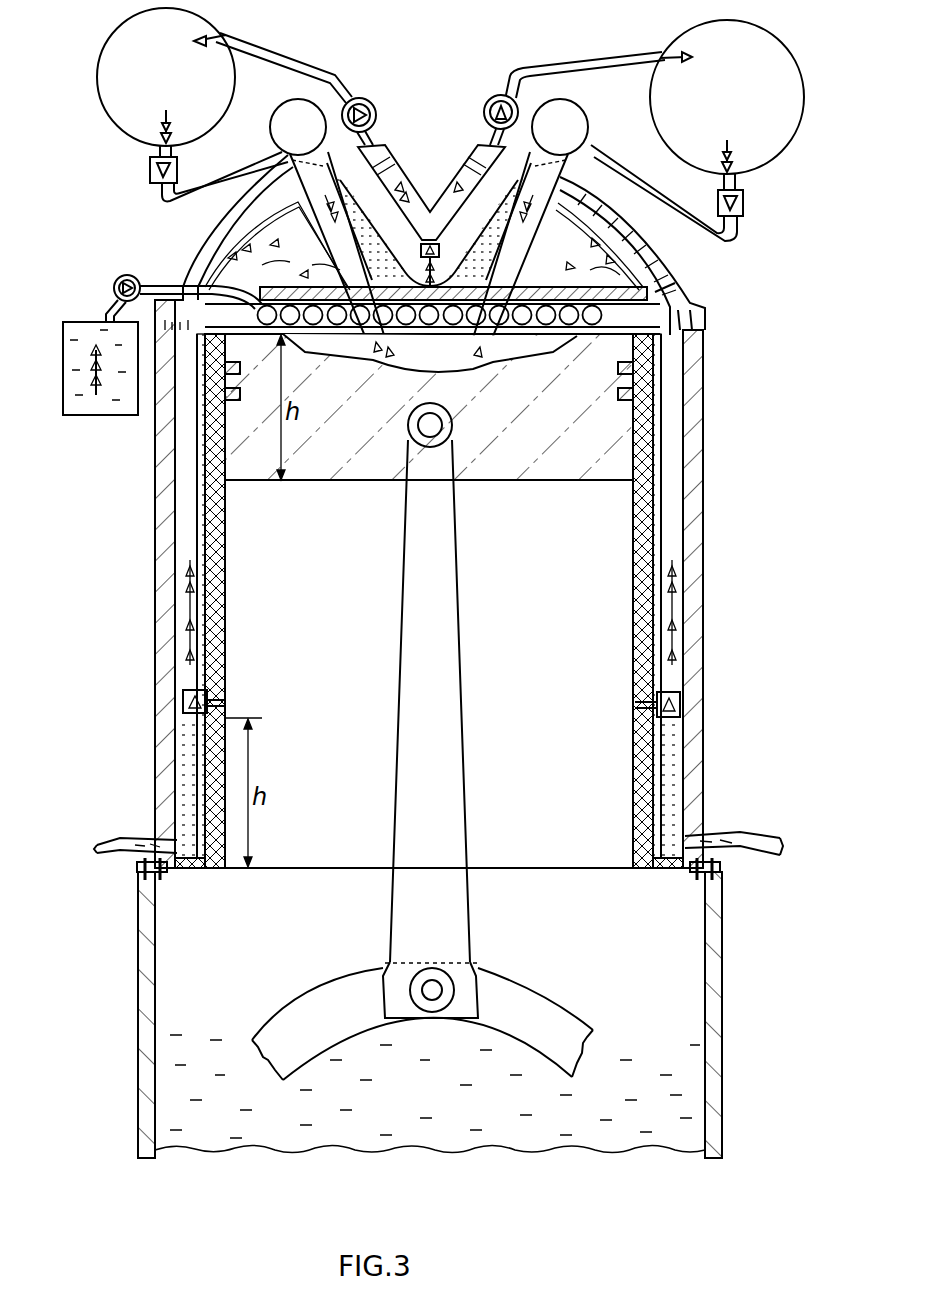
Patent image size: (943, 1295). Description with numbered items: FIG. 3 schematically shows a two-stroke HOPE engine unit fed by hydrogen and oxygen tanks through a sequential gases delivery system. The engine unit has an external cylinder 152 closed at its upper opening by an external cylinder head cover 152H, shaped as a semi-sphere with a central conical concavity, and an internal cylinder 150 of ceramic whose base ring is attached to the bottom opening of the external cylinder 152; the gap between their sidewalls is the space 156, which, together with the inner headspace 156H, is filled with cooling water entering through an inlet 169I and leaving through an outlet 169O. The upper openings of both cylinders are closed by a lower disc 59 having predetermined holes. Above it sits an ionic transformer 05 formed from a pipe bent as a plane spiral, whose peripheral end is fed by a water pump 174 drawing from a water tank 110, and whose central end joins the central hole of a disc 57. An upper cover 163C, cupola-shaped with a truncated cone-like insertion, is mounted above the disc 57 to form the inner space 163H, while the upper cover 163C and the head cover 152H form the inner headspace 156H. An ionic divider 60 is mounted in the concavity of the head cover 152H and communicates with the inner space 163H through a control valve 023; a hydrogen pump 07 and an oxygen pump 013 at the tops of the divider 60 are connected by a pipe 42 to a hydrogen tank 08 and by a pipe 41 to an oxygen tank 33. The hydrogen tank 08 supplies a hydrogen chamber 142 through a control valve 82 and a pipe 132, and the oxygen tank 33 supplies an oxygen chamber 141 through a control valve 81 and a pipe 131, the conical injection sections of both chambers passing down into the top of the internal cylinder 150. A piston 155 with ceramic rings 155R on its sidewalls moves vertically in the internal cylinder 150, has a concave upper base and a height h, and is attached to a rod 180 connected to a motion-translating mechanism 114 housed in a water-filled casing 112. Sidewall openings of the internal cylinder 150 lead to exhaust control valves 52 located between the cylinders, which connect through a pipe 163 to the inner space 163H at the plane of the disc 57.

The oxygen tank 33 is at (98, 82).
The pipe 41 is at (289, 62).
The oxygen pump 013 is at (369, 99).
The oxygen chamber 141 is at (310, 101).
The control valve 81 is at (150, 170).
The pipe 131 is at (236, 173).
The external cylinder head cover 152H is at (258, 193).
The inner headspace 156H is at (226, 243).
The disc 57 is at (250, 283).
The water pump 174 is at (120, 278).
The water tank 110 is at (68, 312).
The ionic divider 60 is at (392, 152).
The control valve 023 is at (432, 208).
The hydrogen pump 07 is at (495, 98).
The hydrogen chamber 142 is at (578, 115).
The pipe 42 is at (603, 62).
The hydrogen tank 08 is at (810, 106).
The pipe 132 is at (636, 166).
The control valve 82 is at (745, 200).
The inner space 163H is at (575, 190).
The upper cover 163C is at (640, 236).
The ionic transformer 05 is at (675, 283).
The lower disc 59 is at (700, 311).
The external cylinder 152 is at (705, 330).
The ceramic rings 155R is at (636, 370).
The piston 155 is at (627, 415).
The internal cylinder 150 is at (657, 441).
The space 156 is at (690, 498).
The pipe 163 is at (670, 553).
The exhaust control valves 52 is at (684, 700).
The outlet 169O is at (105, 840).
The inlet 169I is at (766, 835).
The rod 180 is at (400, 920).
The motion-translating mechanism 114 is at (575, 1000).
The casing 112 is at (136, 1113).